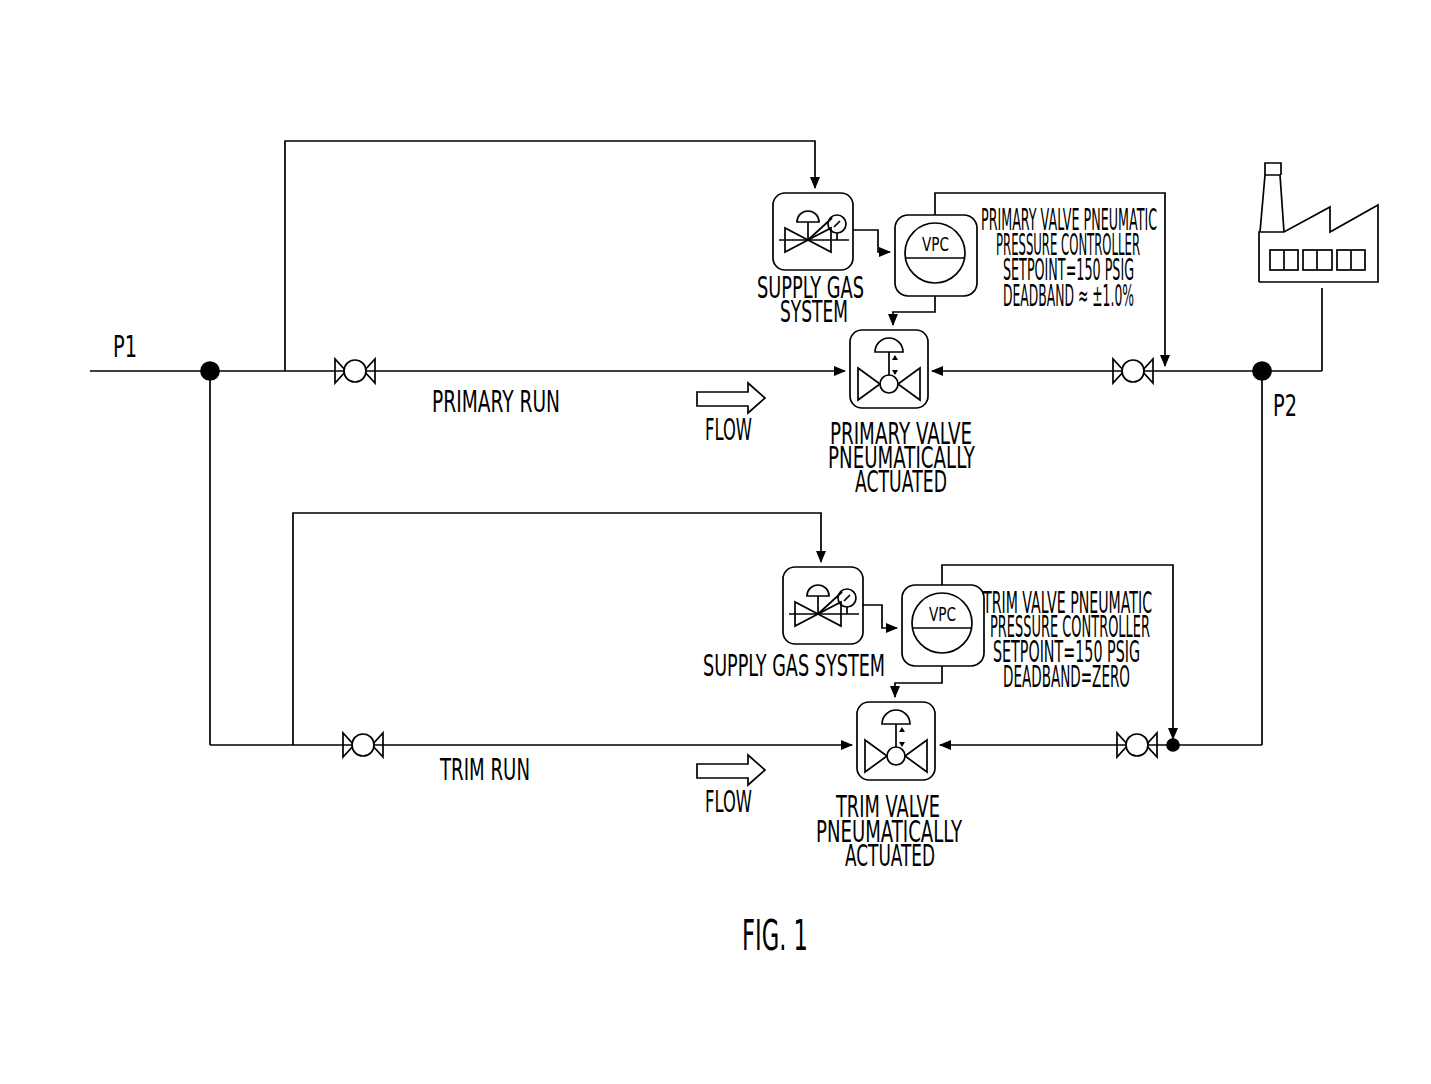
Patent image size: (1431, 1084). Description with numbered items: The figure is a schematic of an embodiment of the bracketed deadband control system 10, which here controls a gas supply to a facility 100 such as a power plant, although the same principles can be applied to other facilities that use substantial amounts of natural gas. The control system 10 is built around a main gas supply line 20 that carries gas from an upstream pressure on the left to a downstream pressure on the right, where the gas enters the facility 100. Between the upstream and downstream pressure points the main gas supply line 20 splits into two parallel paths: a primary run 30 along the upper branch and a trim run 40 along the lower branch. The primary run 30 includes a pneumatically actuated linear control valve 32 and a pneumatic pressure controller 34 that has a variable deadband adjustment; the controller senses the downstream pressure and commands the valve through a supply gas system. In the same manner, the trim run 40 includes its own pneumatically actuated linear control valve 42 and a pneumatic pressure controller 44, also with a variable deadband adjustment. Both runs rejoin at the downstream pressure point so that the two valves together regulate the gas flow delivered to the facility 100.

The bracketed deadband control system 10 is at (225, 126).
The main gas supply line 20 is at (162, 370).
The primary run 30 is at (286, 200).
The pneumatically actuated linear control valve 32 is at (850, 360).
The pneumatic pressure controller 34 is at (942, 226).
The trim run 40 is at (209, 497).
The pneumatically actuated linear control valve 42 is at (933, 762).
The pneumatic pressure controller 44 is at (947, 592).
The facility 100 is at (1245, 178).